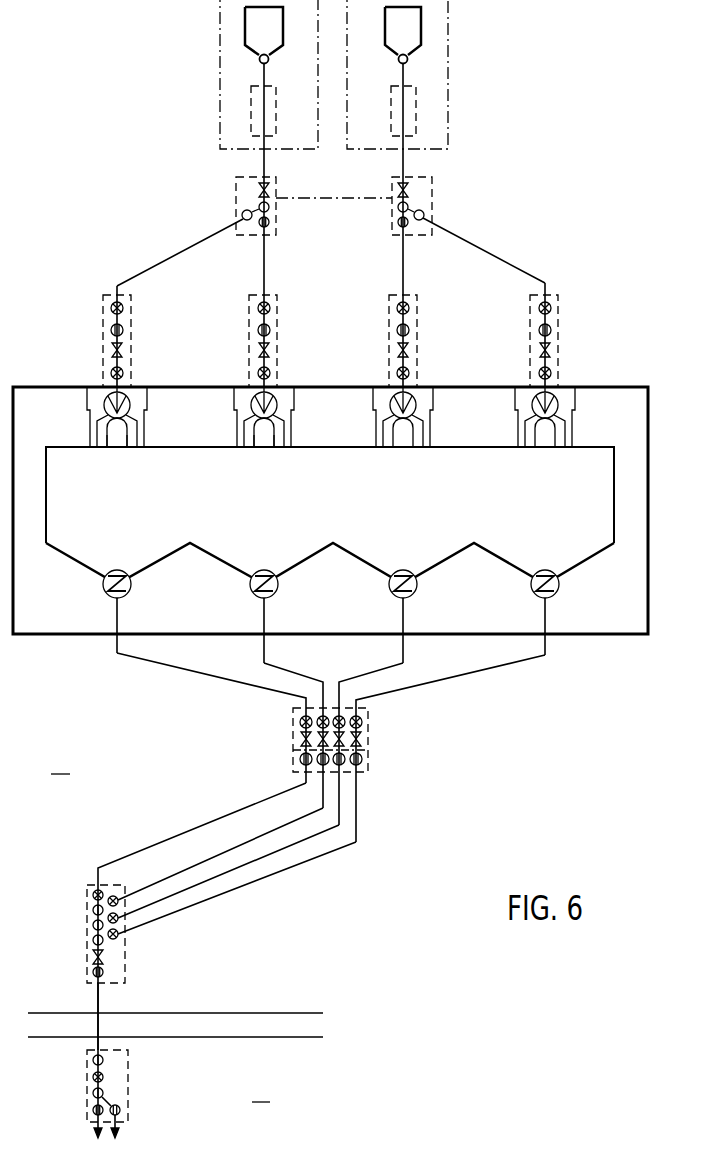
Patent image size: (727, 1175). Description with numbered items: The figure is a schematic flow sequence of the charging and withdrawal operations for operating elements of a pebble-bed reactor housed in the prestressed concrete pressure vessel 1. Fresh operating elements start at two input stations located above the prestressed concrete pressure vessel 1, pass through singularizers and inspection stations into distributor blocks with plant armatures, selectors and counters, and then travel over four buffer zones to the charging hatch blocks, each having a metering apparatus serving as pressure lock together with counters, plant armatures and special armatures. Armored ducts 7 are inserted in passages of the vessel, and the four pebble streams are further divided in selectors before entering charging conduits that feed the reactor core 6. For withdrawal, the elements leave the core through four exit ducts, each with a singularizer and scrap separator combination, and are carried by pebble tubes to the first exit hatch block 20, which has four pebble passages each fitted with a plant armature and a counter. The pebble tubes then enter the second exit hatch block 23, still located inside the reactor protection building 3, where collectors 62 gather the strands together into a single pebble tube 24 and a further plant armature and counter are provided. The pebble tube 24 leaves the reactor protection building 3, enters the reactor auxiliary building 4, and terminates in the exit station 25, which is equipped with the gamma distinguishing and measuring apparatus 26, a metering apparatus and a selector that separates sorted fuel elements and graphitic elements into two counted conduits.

The prestressed concrete pressure vessel 1 is at (633, 495).
The reactor protection building 3 is at (60, 760).
The reactor auxiliary building 4 is at (175, 1058).
The reactor core 6 is at (342, 520).
The armored duct 7 is at (575, 400).
The first exit hatch block 20 is at (368, 770).
The second exit hatch block 23 is at (93, 885).
The pebble tube 24 is at (100, 1000).
The exit station 25 is at (118, 1061).
The gamma distinguishing and/or measuring apparatus 26 is at (93, 1060).
The collector 62 is at (93, 940).